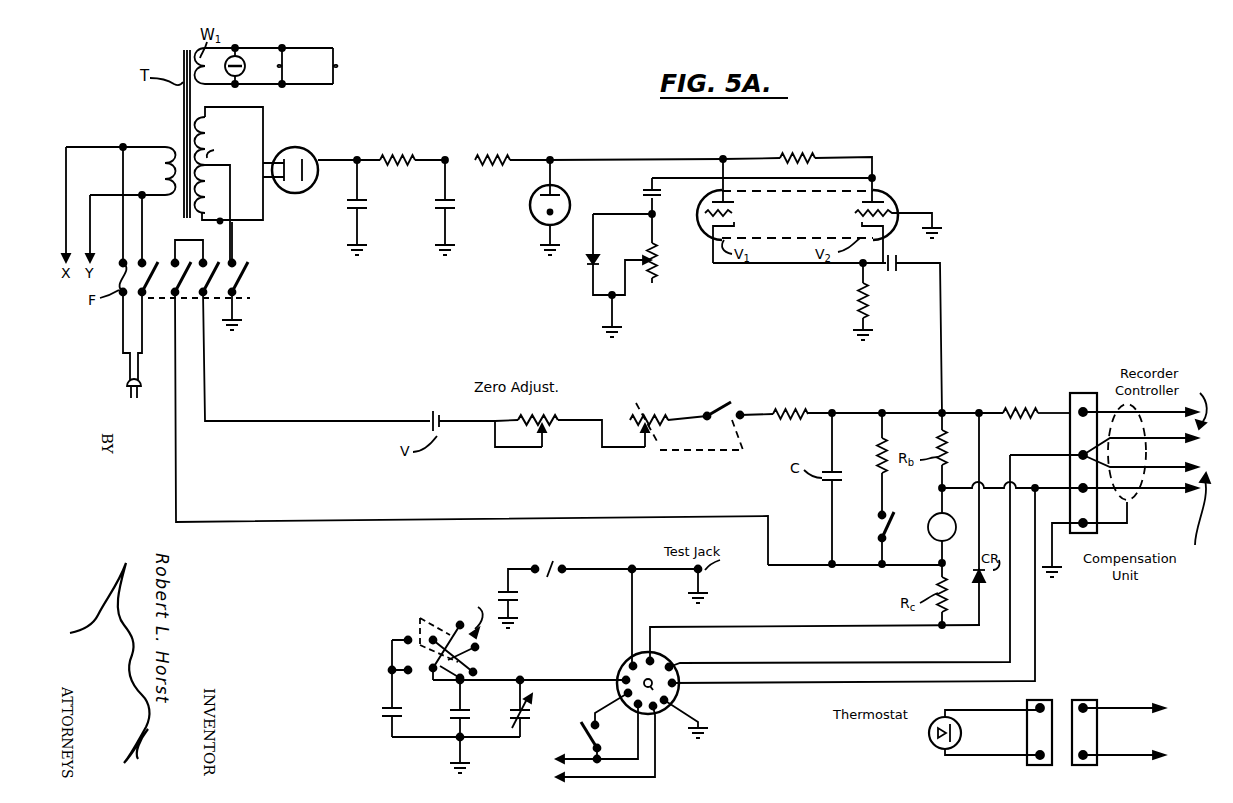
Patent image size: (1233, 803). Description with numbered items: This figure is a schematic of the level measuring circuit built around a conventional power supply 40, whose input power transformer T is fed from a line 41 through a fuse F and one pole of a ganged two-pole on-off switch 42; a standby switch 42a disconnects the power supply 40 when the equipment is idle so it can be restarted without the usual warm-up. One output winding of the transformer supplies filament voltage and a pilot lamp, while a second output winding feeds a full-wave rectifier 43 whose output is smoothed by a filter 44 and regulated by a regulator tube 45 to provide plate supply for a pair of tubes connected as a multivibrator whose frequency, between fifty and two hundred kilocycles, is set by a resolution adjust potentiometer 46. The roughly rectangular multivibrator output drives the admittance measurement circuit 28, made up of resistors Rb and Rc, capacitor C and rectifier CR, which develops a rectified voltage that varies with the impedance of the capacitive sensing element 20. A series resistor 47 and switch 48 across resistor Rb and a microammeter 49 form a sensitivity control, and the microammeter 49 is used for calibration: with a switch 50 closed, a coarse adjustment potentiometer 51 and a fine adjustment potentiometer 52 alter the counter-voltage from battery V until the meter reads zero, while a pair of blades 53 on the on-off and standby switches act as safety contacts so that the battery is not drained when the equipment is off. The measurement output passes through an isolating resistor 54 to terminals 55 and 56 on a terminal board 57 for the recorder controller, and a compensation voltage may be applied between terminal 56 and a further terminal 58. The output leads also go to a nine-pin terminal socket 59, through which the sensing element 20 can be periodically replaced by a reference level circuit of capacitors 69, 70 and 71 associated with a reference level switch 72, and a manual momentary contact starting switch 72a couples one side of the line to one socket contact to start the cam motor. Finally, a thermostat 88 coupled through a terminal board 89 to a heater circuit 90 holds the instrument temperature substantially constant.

The capacitive transducer 20 is at (550, 566).
The admittance measurement circuit 28 is at (858, 592).
The power supply 40 is at (302, 251).
The line 41 is at (128, 358).
The on-off switch 42 is at (148, 299).
The standby switch 42a is at (242, 301).
The full-wave rectifier 43 is at (302, 154).
The filter 44 is at (410, 217).
The regulator tube 45 is at (568, 202).
The resolution adjust potentiometer 46 is at (652, 270).
The resistor 47 is at (878, 461).
The switch 48 is at (878, 535).
The microammeter 49 is at (929, 541).
The switch 50 is at (732, 410).
The coarse adjustment potentiometer 51 is at (664, 425).
The fine adjustment potentiometer 52 is at (550, 432).
The blades 53 is at (200, 273).
The resistor 54 is at (1027, 406).
The terminal 55 is at (1073, 417).
The terminal 56 is at (1072, 458).
The terminal board 57 is at (1104, 469).
The terminal 58 is at (1078, 493).
The terminal socket 59 is at (683, 690).
The capacitor 69 is at (533, 711).
The capacitor 70 is at (465, 724).
The capacitor 71 is at (386, 713).
The reference level switch 72 is at (466, 663).
The manual momentary contact starting switch 72a is at (582, 745).
The thermostat 88 is at (946, 717).
The terminal board 89 is at (1083, 700).
The heater circuit 90 is at (1165, 709).